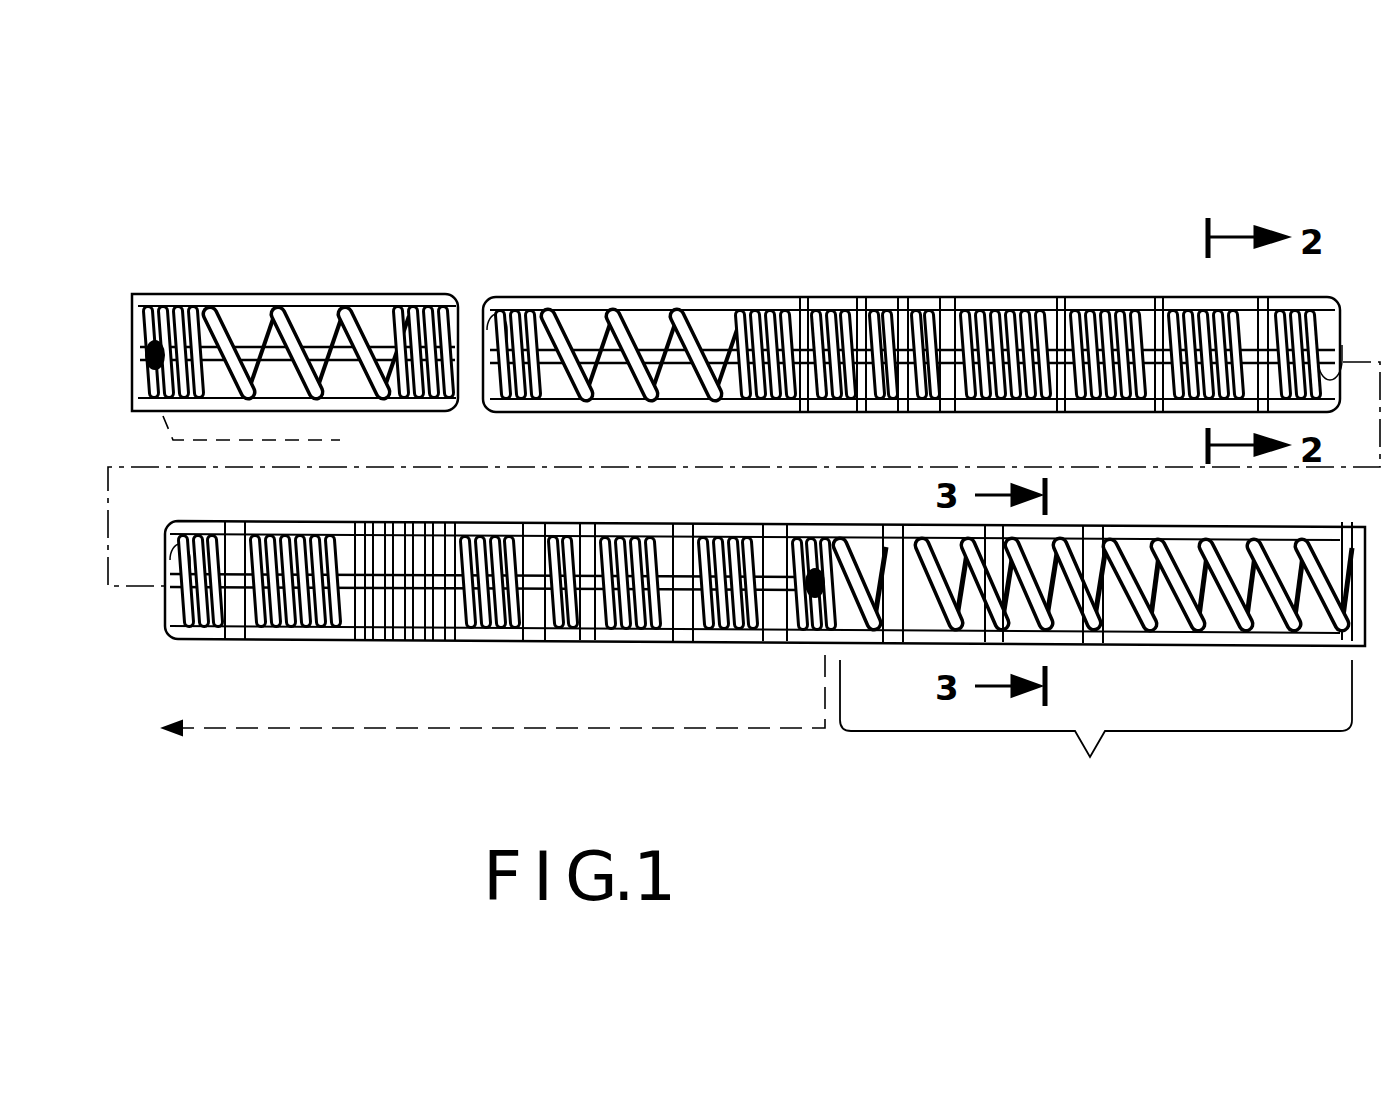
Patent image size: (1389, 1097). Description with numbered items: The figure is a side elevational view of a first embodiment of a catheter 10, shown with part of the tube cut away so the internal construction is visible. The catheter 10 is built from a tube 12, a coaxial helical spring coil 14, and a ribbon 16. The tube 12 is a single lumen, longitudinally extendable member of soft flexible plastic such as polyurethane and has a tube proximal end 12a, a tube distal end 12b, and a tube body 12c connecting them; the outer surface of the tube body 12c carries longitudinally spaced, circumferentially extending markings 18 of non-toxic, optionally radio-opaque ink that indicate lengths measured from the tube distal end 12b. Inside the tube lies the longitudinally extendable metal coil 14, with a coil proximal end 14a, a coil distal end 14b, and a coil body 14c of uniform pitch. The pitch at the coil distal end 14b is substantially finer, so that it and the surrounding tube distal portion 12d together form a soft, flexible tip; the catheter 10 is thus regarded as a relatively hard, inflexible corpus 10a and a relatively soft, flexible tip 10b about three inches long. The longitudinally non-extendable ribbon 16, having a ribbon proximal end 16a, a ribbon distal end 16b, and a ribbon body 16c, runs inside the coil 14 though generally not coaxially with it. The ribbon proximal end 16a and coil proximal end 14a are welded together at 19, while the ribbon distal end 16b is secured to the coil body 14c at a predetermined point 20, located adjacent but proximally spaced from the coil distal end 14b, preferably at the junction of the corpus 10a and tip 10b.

The catheter 10 is at (393, 289).
The catheter corpus 10a is at (736, 551).
The catheter tip 10b is at (1096, 708).
The tube 12 is at (535, 292).
The tube proximal end 12a is at (137, 360).
The tube distal end 12b is at (1360, 540).
The tube body 12c is at (966, 416).
The tube distal portion 12d is at (765, 666).
The coil 14 is at (600, 340).
The coil proximal end 14a is at (205, 330).
The coil distal end 14b is at (1330, 618).
The coil body 14c is at (1098, 383).
The ribbon 16 is at (660, 355).
The ribbon proximal end 16a is at (298, 280).
The ribbon distal end 16b is at (818, 545).
The ribbon body 16c is at (1205, 370).
The markings 18 is at (945, 296).
The securing point of ribbon and coil proximal ends 19 is at (150, 352).
The predetermined point 20 is at (788, 539).